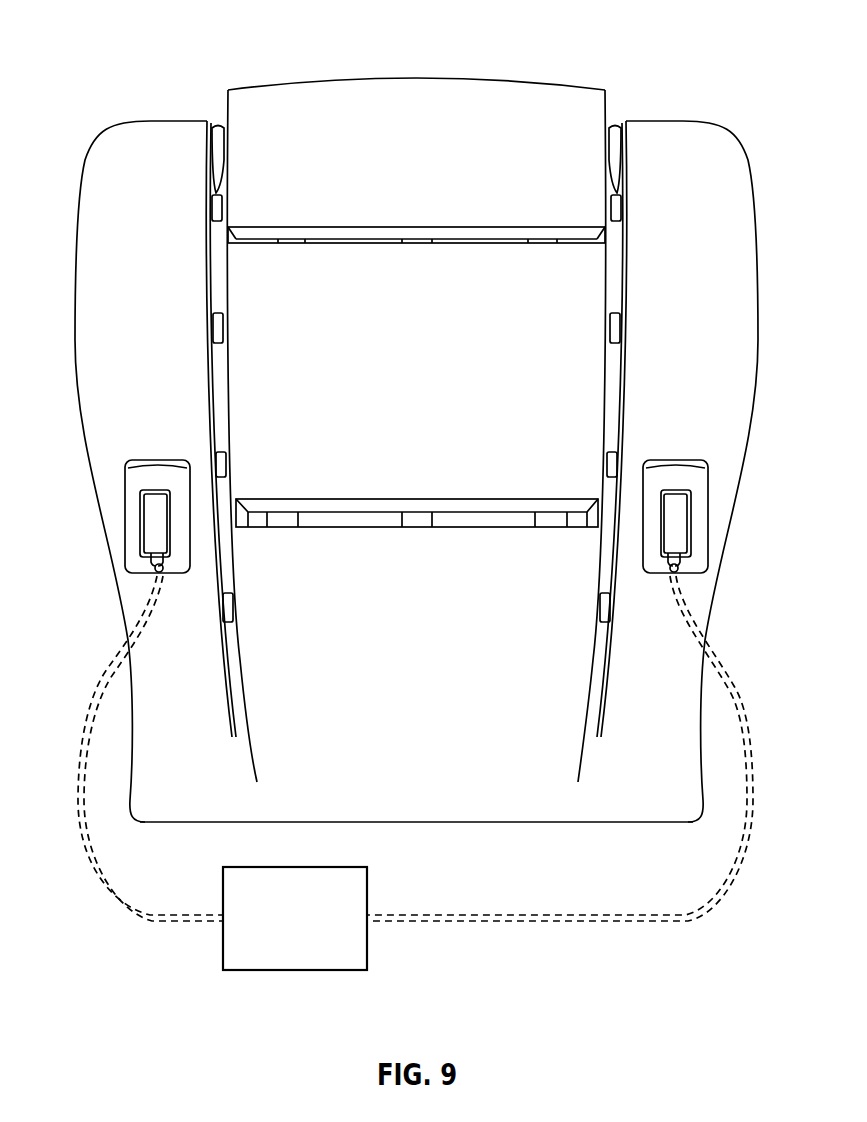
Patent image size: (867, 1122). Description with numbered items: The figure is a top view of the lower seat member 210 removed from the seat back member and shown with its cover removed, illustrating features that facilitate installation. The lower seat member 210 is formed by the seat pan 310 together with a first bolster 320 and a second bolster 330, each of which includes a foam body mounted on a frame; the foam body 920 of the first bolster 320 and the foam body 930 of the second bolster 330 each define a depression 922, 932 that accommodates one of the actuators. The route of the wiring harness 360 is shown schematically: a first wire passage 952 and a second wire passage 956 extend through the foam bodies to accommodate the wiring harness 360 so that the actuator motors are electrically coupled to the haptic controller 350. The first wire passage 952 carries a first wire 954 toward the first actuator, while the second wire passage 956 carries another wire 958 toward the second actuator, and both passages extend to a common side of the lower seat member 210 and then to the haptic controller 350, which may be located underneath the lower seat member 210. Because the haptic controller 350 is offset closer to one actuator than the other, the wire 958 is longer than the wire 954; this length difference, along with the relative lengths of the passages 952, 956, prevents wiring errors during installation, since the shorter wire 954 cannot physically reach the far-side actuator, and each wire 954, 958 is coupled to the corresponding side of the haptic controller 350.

The lower seat member 210 is at (234, 42).
The seat pan 310 is at (459, 804).
The first bolster 320 is at (203, 831).
The second bolster 330 is at (640, 831).
The haptic controller 350 is at (338, 971).
The wiring harness 360 is at (165, 632).
The foam body 920 is at (195, 180).
The foam body 930 is at (642, 177).
The depression 922 is at (144, 455).
The depression 932 is at (686, 455).
The first wire passage 952 is at (140, 621).
The first wire 954 is at (153, 597).
The second wire passage 956 is at (682, 606).
The wire 958 is at (680, 588).